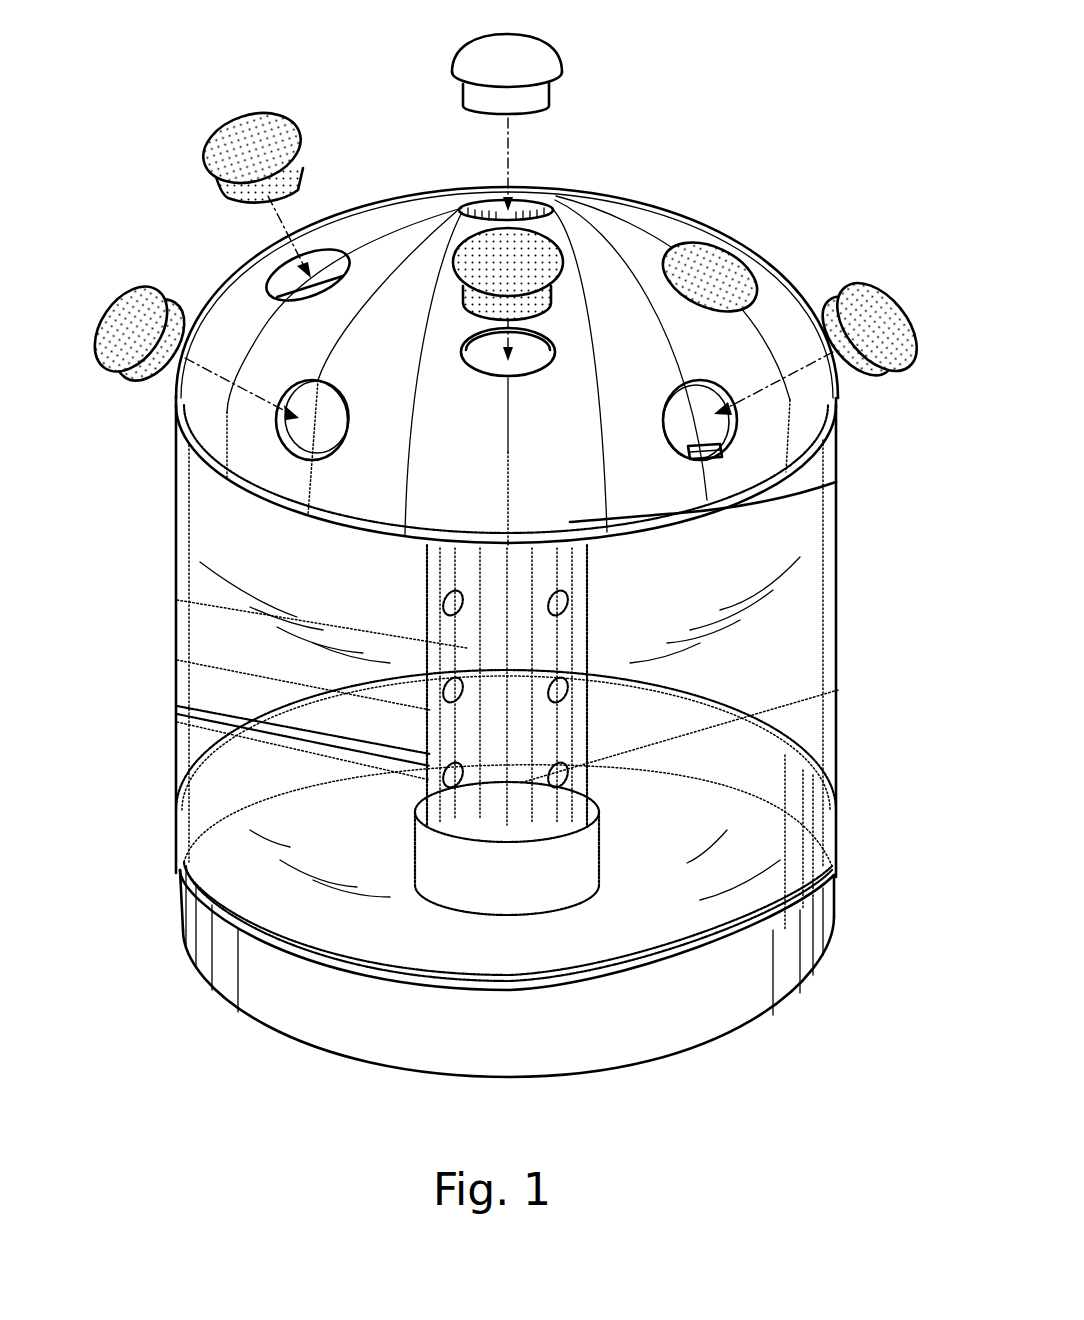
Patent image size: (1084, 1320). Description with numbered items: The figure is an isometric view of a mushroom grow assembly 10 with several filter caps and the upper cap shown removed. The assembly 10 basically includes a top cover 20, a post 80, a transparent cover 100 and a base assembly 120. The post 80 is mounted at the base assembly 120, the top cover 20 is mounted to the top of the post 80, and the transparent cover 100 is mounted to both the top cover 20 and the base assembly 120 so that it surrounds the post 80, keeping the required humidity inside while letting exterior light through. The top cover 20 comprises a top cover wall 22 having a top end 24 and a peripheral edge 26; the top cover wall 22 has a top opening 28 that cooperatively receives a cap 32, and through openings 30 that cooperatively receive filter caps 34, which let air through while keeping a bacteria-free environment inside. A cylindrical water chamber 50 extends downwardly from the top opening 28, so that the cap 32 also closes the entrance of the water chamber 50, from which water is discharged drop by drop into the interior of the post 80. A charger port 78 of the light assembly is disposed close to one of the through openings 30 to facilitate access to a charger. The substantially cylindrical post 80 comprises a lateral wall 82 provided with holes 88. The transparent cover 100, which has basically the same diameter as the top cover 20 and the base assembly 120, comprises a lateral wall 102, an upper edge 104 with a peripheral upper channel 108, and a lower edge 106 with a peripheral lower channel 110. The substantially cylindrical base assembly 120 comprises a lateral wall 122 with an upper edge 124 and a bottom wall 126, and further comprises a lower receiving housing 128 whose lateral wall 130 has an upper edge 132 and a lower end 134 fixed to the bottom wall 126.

The mushroom grow assembly 10 is at (874, 95).
The top cover 20 is at (192, 255).
The top cover wall 22 is at (628, 215).
The top end 24 is at (556, 250).
The peripheral edge 26 is at (838, 548).
The top opening 28 is at (462, 196).
The through openings 30 is at (306, 258).
The cap 32 is at (552, 47).
The filter caps 34 is at (215, 135).
The water chamber 50 is at (532, 202).
The charger port 78 is at (714, 450).
The post 80 is at (177, 660).
The lateral wall 82 is at (177, 600).
The holes 88 is at (177, 708).
The transparent cover 100 is at (150, 549).
The lateral wall 102 is at (758, 653).
The upper edge 104 is at (836, 490).
The lower edge 106 is at (650, 977).
The peripheral upper channel 108 is at (175, 447).
The peripheral lower channel 110 is at (176, 797).
The base assembly 120 is at (152, 908).
The lateral wall 122 is at (280, 982).
The upper edge 124 is at (800, 907).
The bottom wall 126 is at (338, 1058).
The lower receiving housing 128 is at (838, 770).
The lateral wall 130 is at (540, 923).
The upper edge 132 is at (838, 692).
The lower end 134 is at (416, 985).